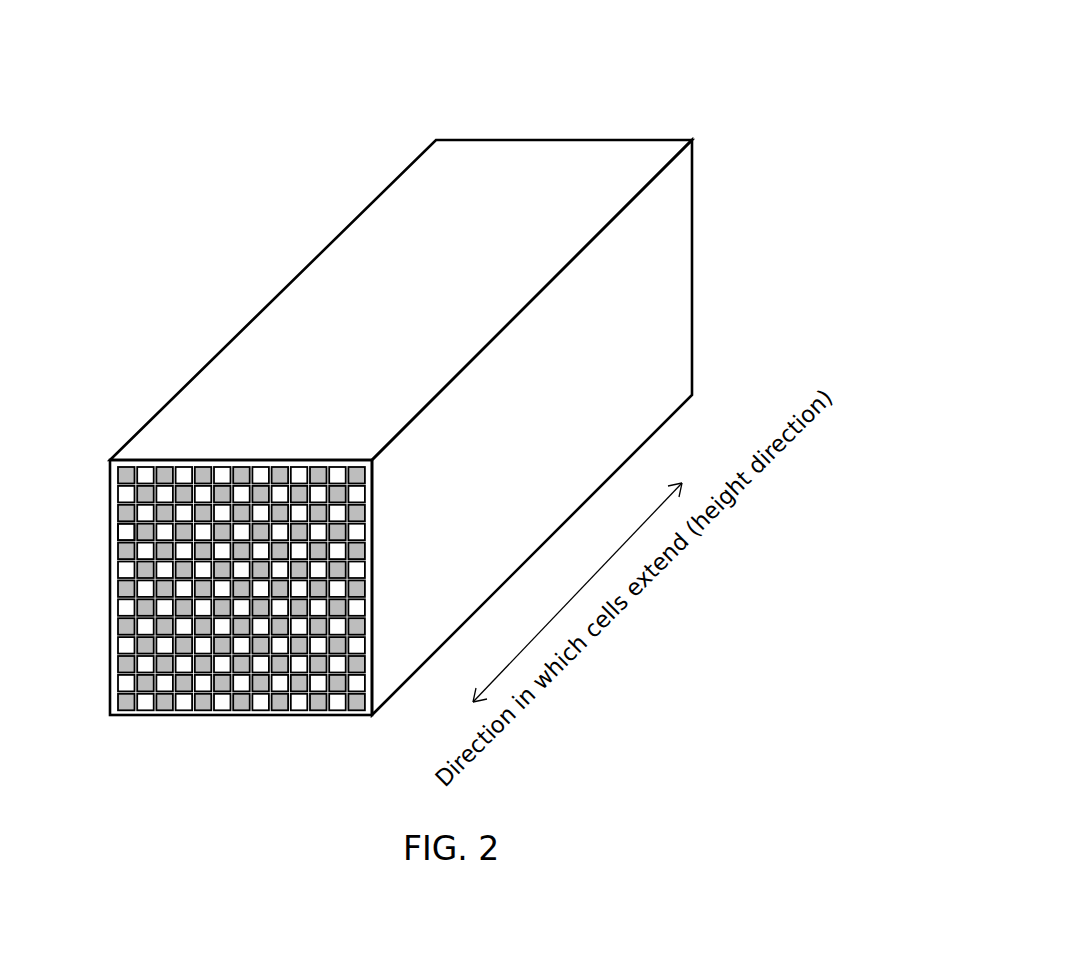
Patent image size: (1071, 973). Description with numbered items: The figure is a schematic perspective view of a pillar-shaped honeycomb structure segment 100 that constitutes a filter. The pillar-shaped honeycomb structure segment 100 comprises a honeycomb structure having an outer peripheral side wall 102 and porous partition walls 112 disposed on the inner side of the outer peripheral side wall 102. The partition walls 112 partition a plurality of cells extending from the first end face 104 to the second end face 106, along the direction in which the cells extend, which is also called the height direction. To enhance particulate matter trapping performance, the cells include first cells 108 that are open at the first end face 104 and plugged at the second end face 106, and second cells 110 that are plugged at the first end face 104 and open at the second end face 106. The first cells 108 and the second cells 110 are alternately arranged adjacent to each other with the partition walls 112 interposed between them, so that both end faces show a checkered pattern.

The pillar-shaped honeycomb structure segment 100 is at (458, 100).
The outer peripheral side wall 102 is at (668, 358).
The first end face 104 is at (108, 680).
The second end face 106 is at (553, 138).
The first cells 108 is at (123, 586).
The second cells 110 is at (126, 527).
The partition walls 112 is at (124, 478).